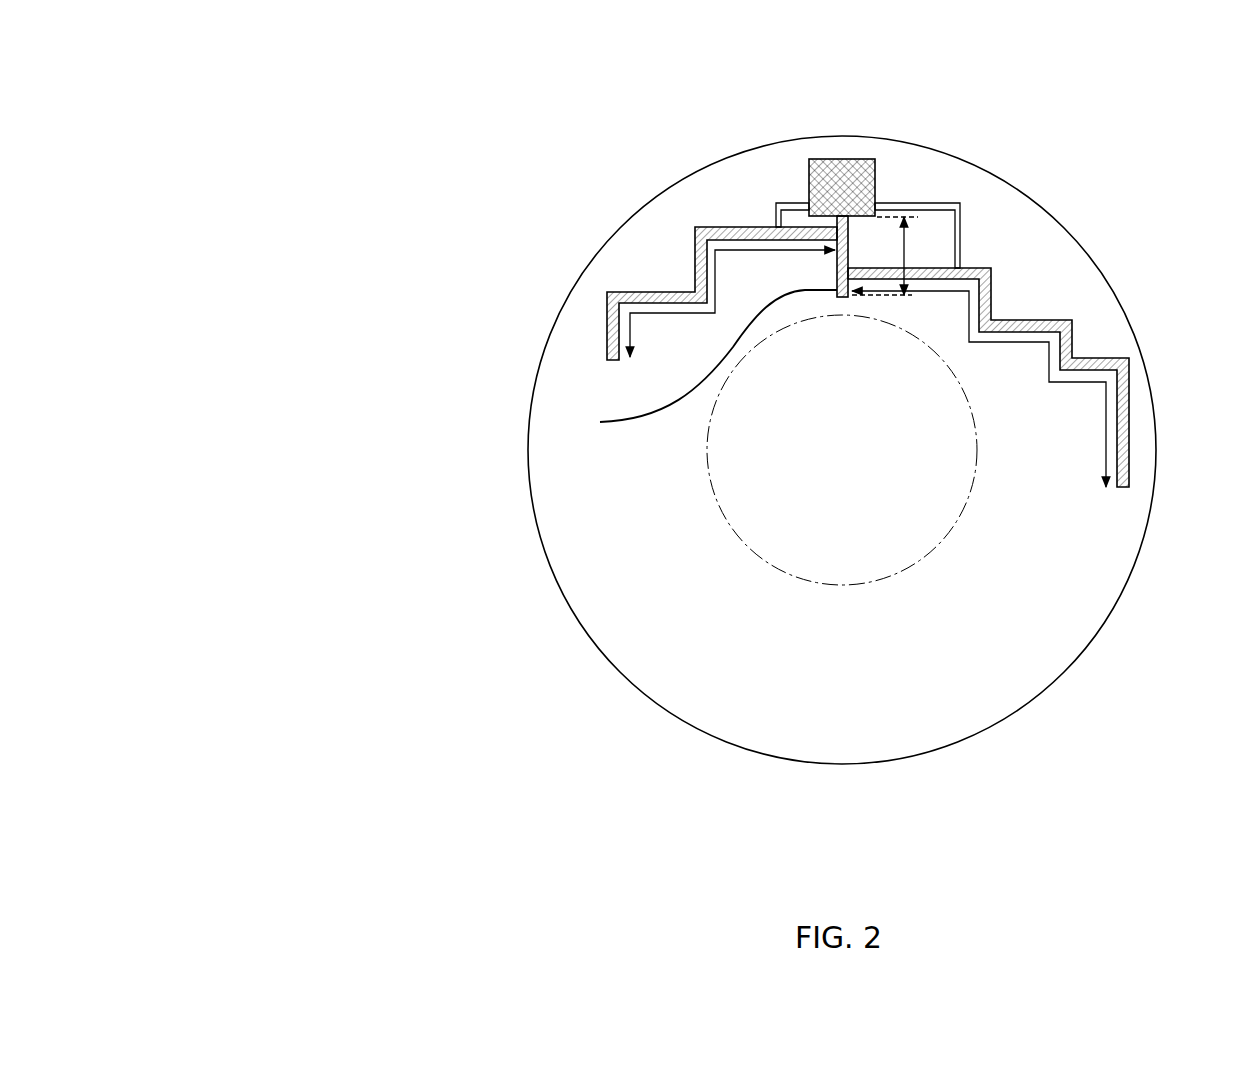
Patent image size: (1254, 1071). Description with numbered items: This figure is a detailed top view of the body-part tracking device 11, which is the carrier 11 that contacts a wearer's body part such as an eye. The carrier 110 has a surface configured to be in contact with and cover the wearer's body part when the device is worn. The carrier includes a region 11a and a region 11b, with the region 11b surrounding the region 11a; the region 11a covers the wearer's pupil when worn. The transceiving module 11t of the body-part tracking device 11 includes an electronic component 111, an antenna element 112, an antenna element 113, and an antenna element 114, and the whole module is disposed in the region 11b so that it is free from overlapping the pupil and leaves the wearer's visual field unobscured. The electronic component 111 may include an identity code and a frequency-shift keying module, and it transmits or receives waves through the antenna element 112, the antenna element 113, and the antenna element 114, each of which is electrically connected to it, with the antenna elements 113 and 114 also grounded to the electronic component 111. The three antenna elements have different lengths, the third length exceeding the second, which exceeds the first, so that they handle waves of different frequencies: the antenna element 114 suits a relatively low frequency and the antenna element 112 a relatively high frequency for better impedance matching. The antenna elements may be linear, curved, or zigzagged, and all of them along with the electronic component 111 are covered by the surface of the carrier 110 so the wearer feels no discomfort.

The body-part tracking device 11 is at (209, 76).
The transceiving module 11t is at (295, 247).
The carrier 110 is at (842, 501).
The region 11a is at (800, 578).
The region 11b is at (849, 713).
The electronic component 111 is at (845, 165).
The antenna element 112 is at (600, 422).
The antenna element 113 is at (613, 327).
The antenna element 114 is at (1123, 433).